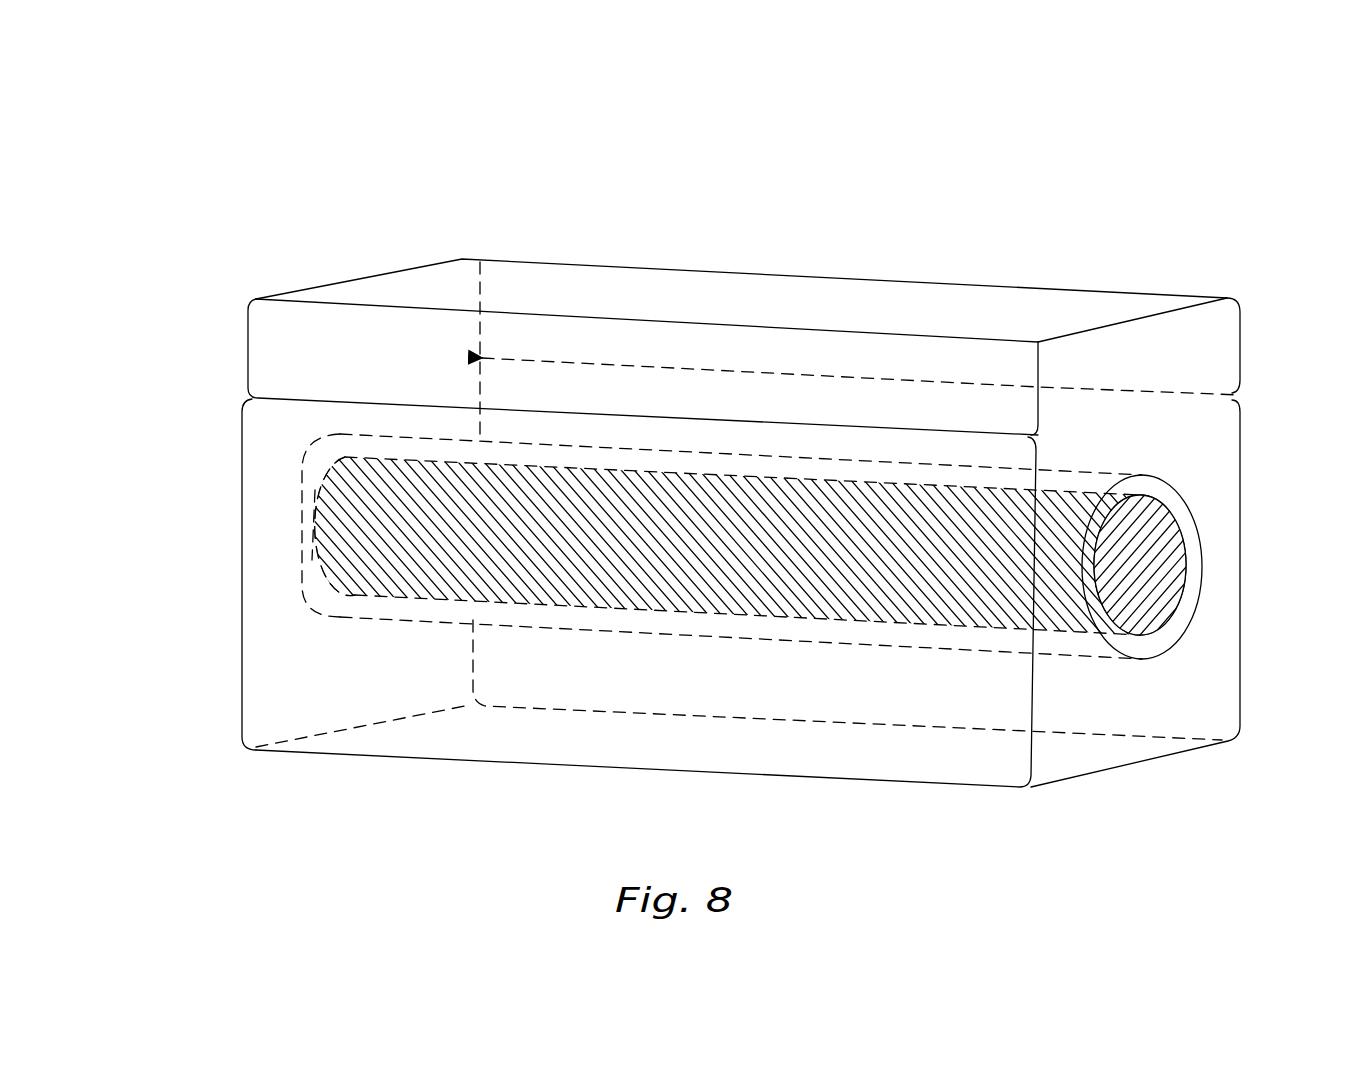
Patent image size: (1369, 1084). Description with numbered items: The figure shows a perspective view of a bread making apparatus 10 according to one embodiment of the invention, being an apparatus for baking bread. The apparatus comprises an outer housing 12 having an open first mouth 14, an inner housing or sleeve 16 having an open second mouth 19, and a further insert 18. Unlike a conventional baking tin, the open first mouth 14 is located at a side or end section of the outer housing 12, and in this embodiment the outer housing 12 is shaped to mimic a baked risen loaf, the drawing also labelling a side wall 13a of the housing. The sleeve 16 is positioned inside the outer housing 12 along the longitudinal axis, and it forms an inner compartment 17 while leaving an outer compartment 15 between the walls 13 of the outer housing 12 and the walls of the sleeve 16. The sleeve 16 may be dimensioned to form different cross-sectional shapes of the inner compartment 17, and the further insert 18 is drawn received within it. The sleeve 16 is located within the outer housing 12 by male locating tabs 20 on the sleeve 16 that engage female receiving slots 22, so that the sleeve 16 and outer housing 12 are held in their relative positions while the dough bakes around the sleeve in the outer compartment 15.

The bread making apparatus 10 is at (318, 200).
The outer housing 12 is at (904, 281).
The walls of the outer housing 13 is at (577, 282).
The side wall 13a is at (239, 606).
The open first mouth 14 is at (1195, 436).
The outer compartment 15 is at (1097, 712).
The sleeve 16 is at (1170, 642).
The inner compartment 17 is at (1134, 652).
The further insert 18 is at (1168, 576).
The open second mouth 19 is at (1186, 614).
The male locating tabs 20 is at (316, 470).
The female receiving slots 22 is at (313, 478).